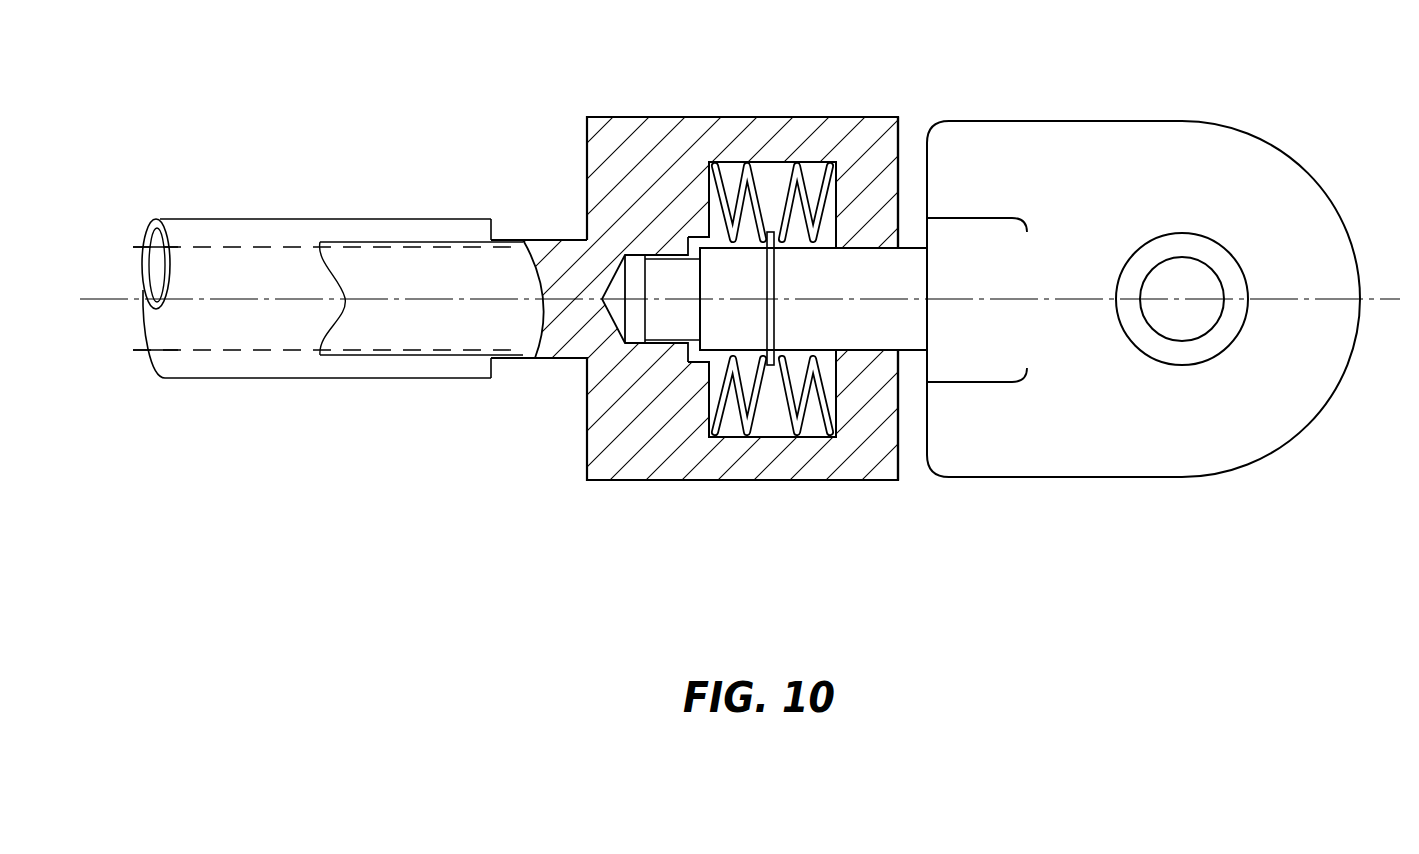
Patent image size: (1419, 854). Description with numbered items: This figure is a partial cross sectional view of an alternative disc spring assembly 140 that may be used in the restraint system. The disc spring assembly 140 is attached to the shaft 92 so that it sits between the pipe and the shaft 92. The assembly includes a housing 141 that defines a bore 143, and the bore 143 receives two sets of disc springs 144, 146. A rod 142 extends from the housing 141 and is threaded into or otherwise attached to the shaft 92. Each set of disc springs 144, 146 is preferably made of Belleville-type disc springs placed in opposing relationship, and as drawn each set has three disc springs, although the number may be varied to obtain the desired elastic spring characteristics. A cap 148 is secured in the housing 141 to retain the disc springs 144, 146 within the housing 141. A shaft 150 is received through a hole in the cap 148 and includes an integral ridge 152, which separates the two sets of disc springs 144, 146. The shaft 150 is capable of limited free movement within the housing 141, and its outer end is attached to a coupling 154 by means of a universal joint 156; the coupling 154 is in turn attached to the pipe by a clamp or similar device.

The shaft 92 is at (293, 226).
The disc spring assembly 140 is at (678, 96).
The housing 141 is at (596, 434).
The rod 142 is at (418, 332).
The bore 143 is at (768, 179).
The disc springs 144 is at (735, 437).
The disc springs 146 is at (813, 437).
The cap 148 is at (887, 172).
The shaft 150 is at (878, 326).
The ridge 152 is at (765, 326).
The coupling 154 is at (1286, 173).
The universal joint 156 is at (1192, 316).